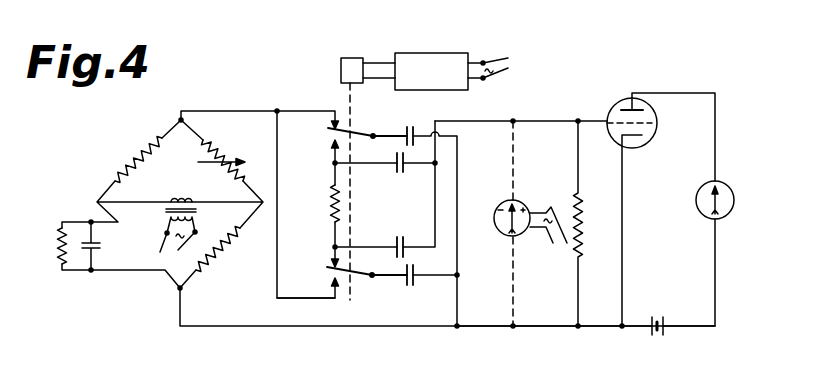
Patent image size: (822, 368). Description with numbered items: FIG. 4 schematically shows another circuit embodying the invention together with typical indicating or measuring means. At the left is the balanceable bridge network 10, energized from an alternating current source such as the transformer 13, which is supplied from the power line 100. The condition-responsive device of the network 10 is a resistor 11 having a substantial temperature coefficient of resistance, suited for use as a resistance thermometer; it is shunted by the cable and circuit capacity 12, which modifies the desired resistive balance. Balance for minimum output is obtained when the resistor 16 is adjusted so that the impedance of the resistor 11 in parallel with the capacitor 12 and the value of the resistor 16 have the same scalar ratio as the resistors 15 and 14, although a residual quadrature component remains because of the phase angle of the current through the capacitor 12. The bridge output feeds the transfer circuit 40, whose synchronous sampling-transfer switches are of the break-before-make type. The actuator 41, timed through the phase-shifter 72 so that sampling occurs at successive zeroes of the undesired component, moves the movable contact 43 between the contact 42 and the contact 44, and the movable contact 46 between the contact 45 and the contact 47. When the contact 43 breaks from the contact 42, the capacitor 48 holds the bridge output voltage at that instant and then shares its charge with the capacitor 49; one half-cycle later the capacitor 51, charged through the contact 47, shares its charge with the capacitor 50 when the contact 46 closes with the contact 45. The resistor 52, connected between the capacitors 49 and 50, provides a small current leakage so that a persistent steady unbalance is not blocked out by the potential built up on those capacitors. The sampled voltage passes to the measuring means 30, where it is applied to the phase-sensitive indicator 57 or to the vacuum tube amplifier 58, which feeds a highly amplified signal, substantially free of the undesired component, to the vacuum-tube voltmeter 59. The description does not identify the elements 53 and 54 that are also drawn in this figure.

The balanceable bridge network 10 is at (57, 167).
The resistor 11 is at (55, 243).
The cable and circuit capacity 12 is at (103, 246).
The transformer 13 is at (174, 198).
The resistor 14 is at (150, 151).
The resistor 15 is at (202, 268).
The resistor 16 is at (207, 142).
The power line 100 is at (361, 161).
The transfer circuit 40 is at (318, 82).
The actuator 41 is at (348, 57).
The contact 42 is at (331, 123).
The movable contact 43 is at (352, 134).
The contact 44 is at (331, 152).
The contact 45 is at (330, 252).
The movable contact 46 is at (363, 276).
The contact 47 is at (330, 289).
The capacitor 48 is at (408, 126).
The capacitor 49 is at (401, 173).
The capacitor 50 is at (395, 238).
The capacitor 51 is at (411, 286).
The resistor 52 is at (331, 201).
The phase-shifter 72 is at (431, 53).
The measuring means 30 is at (533, 108).
The mechanical linkage 53 is at (503, 123).
The common conductor 54 is at (495, 331).
The phase-sensitive indicator 57 is at (494, 210).
The vacuum tube amplifier 58 is at (626, 103).
The vacuum-tube voltmeter 59 is at (726, 210).